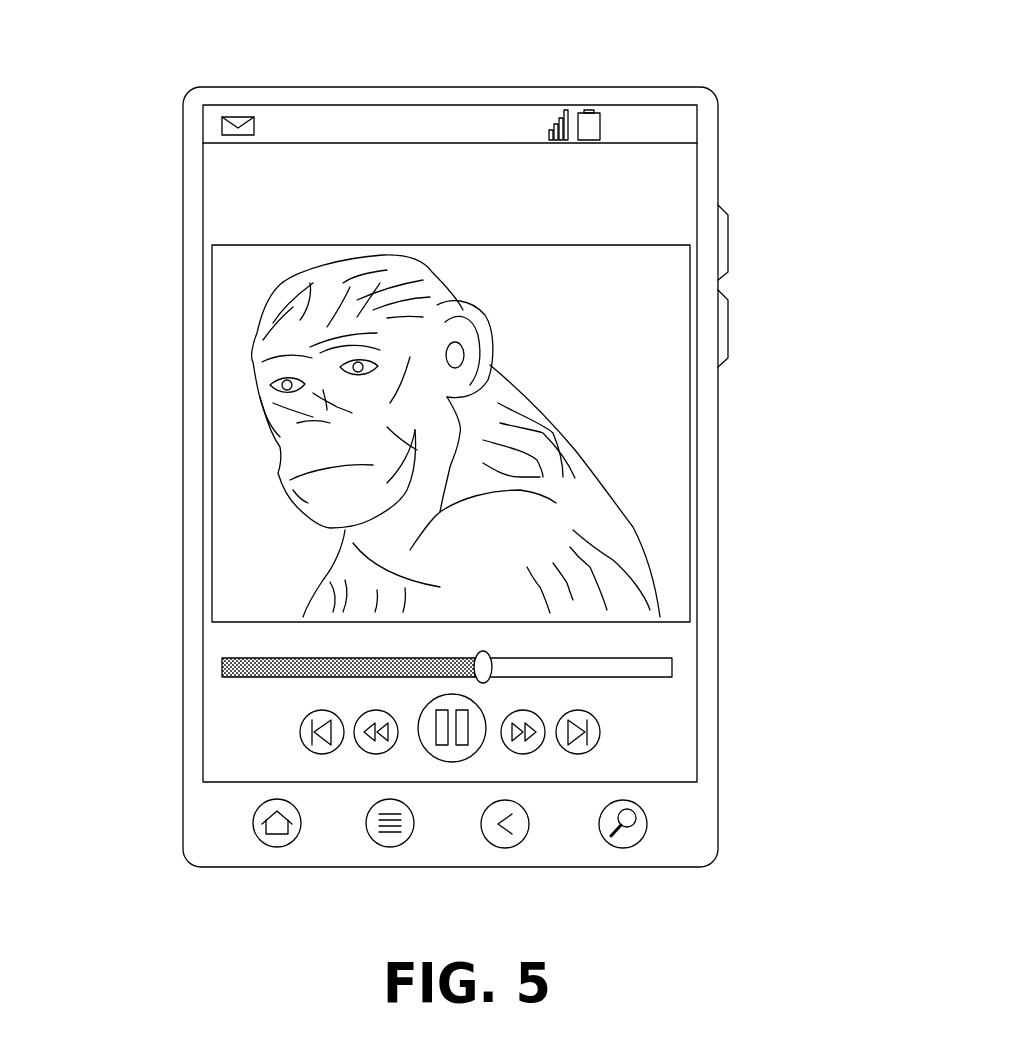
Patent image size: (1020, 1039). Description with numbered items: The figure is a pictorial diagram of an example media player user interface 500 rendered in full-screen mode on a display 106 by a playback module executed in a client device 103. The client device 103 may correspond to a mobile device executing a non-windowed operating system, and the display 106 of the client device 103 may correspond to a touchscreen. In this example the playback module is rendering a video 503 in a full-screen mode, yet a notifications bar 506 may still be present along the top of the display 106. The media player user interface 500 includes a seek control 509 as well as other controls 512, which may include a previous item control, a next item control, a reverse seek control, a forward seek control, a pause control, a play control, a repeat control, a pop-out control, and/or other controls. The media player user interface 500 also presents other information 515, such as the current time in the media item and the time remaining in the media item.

The client device 103 is at (818, 78).
The display 106 is at (290, 103).
The media player user interface 500 is at (232, 170).
The video 503 is at (633, 367).
The notifications bar 506 is at (485, 128).
The seek control 509 is at (635, 667).
The other controls 512 is at (246, 747).
The other information 515 is at (228, 216).